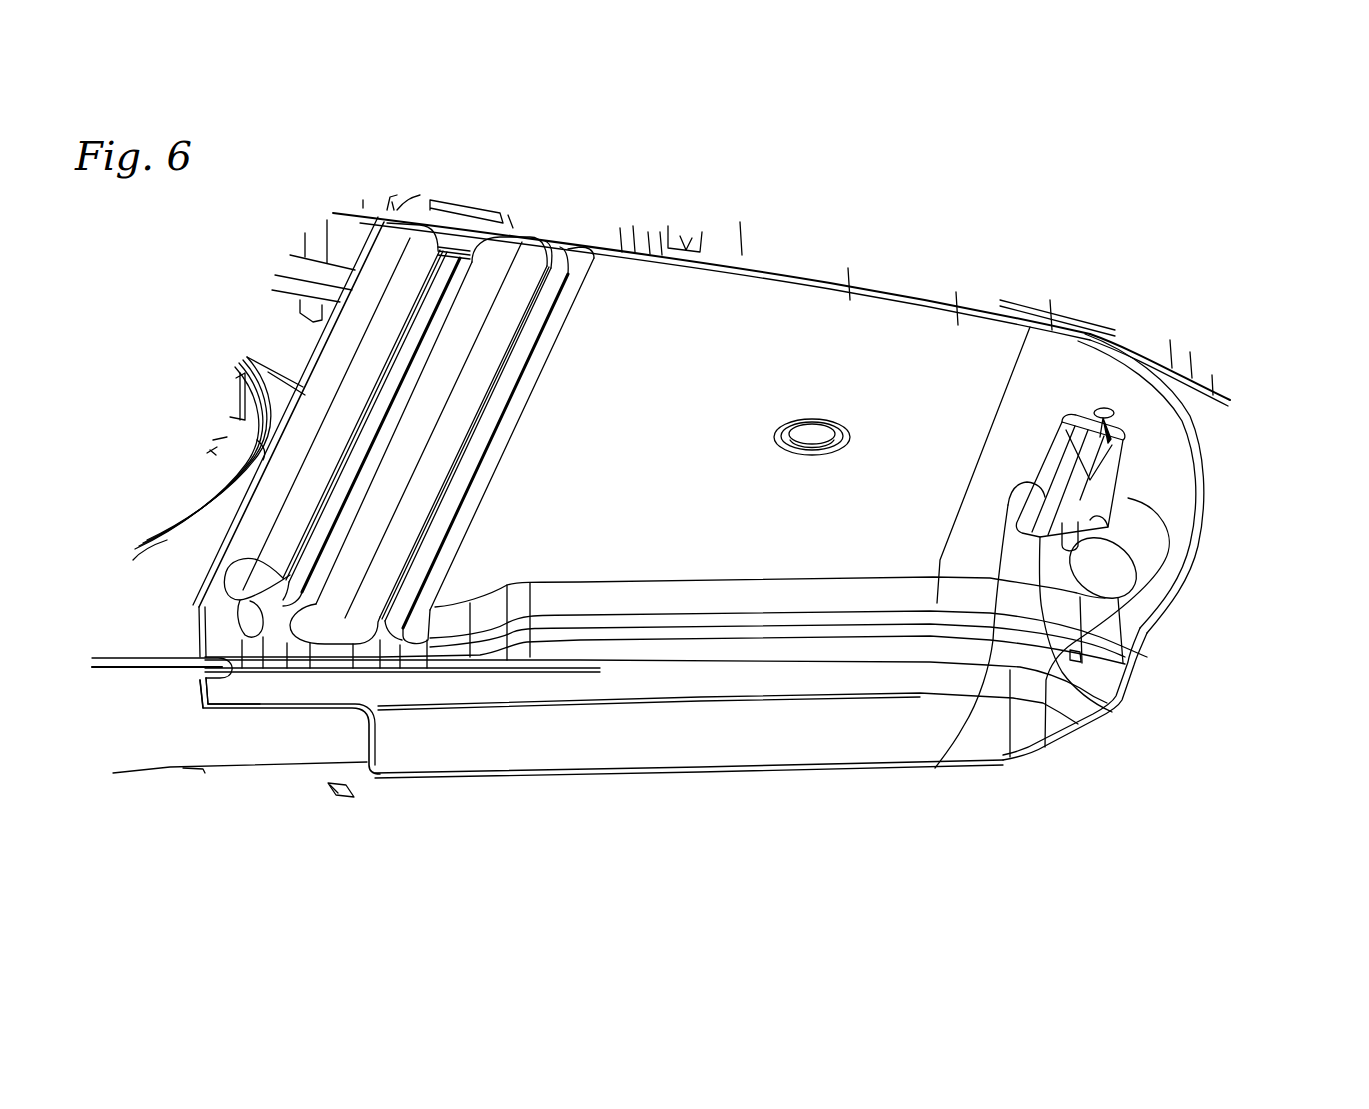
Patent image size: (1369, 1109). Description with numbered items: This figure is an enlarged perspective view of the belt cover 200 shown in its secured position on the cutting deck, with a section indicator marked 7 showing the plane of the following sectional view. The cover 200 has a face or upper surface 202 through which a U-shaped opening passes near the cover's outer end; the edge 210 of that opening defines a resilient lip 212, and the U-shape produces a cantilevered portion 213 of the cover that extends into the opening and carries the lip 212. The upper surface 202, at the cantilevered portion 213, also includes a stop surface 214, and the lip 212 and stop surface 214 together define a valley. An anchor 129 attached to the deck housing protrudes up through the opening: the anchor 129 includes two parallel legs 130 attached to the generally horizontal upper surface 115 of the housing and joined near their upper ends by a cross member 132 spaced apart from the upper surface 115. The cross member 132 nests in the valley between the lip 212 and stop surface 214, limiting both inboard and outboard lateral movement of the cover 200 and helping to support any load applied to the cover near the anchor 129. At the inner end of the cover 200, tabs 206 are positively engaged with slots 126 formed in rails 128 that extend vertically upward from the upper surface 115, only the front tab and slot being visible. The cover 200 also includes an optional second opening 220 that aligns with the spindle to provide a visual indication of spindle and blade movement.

The cover 200 is at (575, 778).
The upper surface 202 is at (643, 338).
The second hole or opening 220 is at (828, 418).
The resilient lip 212 is at (940, 760).
The cantilevered portion 213 is at (1083, 724).
The edge 210 is at (1130, 593).
The parallel legs 130 is at (1122, 615).
The stop surface 214 is at (1132, 550).
The cross member 132 is at (1060, 430).
The anchor 129 is at (1103, 410).
The rails 128 is at (135, 742).
The tabs 206 is at (198, 695).
The slots 126 is at (200, 690).
The upper surface 115 is at (283, 827).
The section line 7 is at (287, 418).